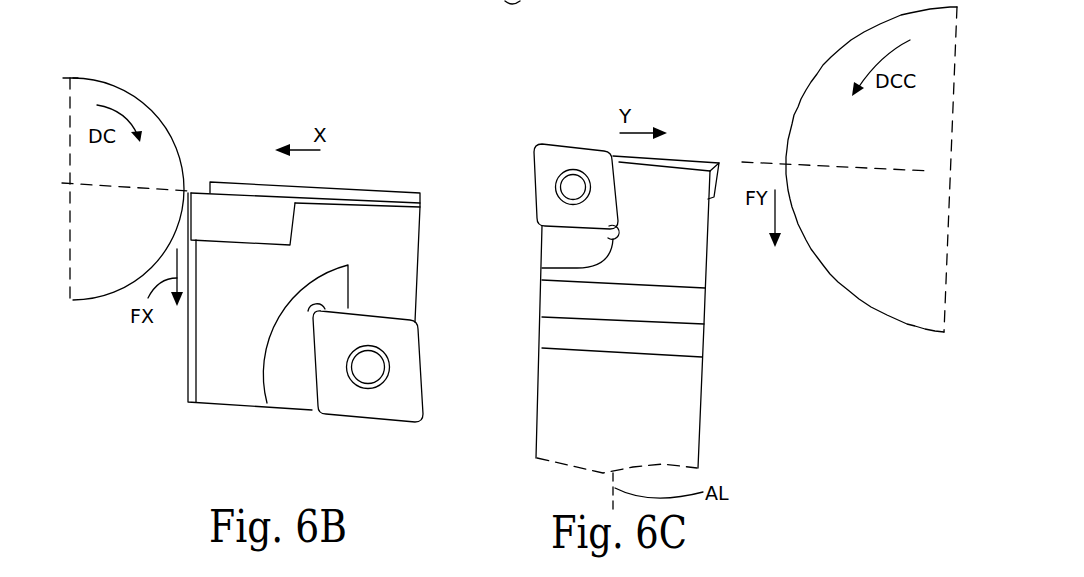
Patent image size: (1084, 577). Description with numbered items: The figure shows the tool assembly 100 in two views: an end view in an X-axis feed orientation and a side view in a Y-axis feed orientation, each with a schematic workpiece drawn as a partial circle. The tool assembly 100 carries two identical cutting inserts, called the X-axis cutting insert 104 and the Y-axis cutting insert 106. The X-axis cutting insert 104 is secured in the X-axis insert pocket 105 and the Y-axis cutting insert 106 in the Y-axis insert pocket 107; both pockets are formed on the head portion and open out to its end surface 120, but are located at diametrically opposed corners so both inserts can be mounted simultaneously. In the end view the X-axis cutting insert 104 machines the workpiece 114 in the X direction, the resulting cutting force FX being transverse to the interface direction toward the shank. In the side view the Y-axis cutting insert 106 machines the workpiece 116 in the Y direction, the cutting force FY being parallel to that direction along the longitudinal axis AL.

In FIG. 6B, the tool assembly 100 is at (136, 40).
In FIG. 6B, the X-axis cutting insert 104 is at (242, 222).
In FIG. 6C, the X-axis cutting insert 104 is at (548, 201).
In FIG. 6C, the X-axis insert pocket 105 is at (542, 268).
In FIG. 6B, the Y-axis cutting insert 106 is at (393, 403).
In FIG. 6C, the Y-axis cutting insert 106 is at (720, 182).
In FIG. 6B, the Y-axis insert pocket 107 is at (312, 372).
In FIG. 6B, the workpiece 114 is at (152, 112).
In FIG. 6C, the workpiece 116 is at (849, 42).
In FIG. 6B, the end surface 120 is at (361, 249).